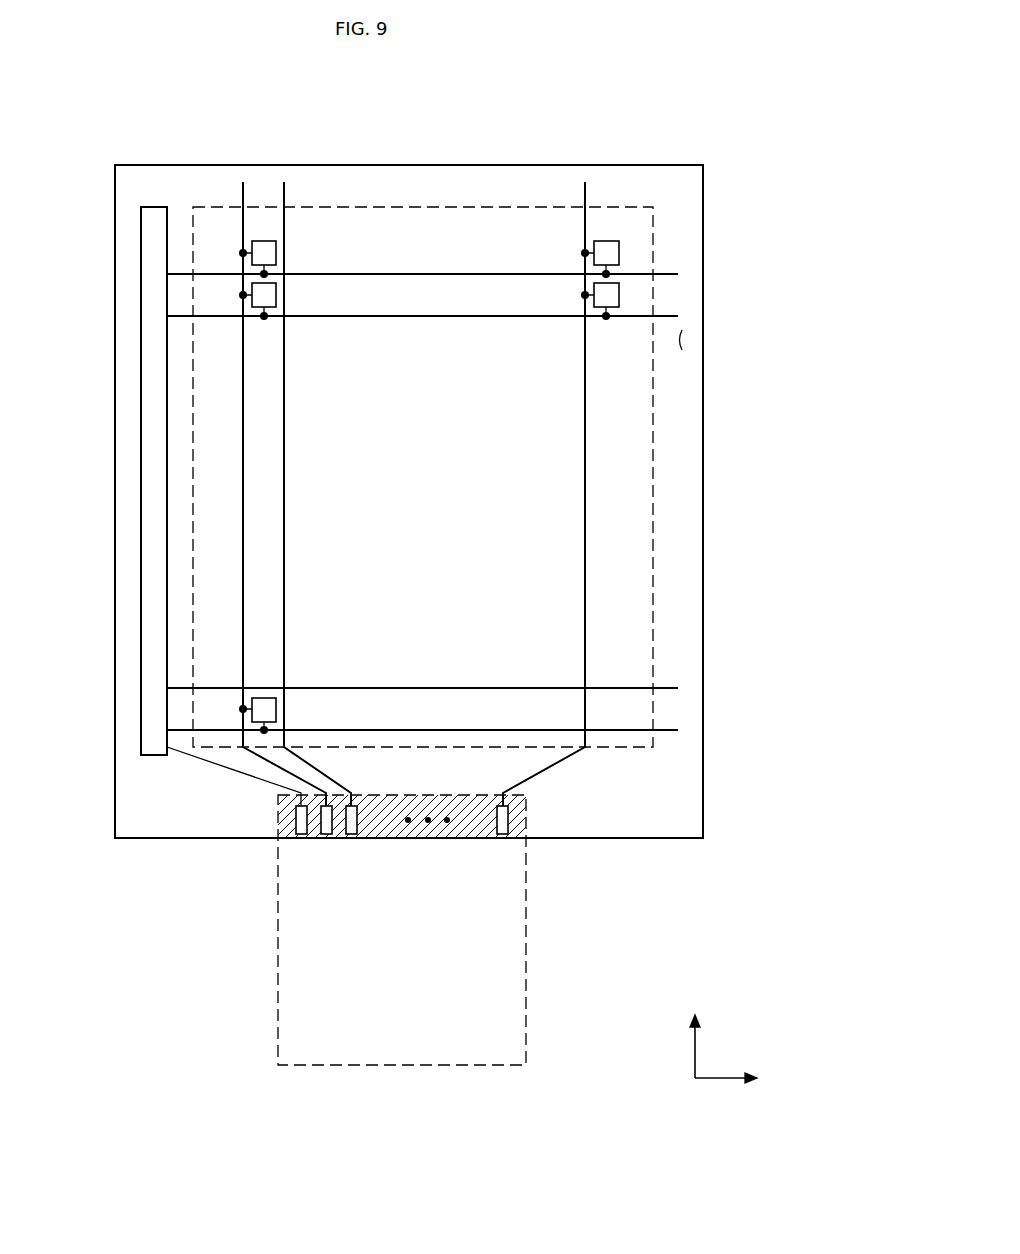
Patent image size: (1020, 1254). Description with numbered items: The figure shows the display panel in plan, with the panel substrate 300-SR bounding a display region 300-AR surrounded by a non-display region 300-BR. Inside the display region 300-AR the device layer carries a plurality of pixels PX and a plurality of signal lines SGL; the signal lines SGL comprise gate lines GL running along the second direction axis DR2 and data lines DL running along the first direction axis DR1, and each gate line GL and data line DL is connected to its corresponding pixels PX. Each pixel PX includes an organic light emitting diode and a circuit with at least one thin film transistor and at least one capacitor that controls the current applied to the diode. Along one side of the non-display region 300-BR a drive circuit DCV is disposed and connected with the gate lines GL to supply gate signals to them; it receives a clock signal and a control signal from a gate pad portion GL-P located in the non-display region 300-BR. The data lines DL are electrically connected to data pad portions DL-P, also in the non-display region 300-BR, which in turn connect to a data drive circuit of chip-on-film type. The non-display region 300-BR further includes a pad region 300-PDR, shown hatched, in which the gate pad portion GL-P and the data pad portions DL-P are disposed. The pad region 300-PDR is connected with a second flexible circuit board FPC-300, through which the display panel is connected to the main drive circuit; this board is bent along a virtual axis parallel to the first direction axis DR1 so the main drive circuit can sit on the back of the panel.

The substrate / display panel region 300-SR is at (157, 817).
The display region 300-AR is at (653, 400).
The non-display region 300-BR is at (682, 340).
The driving circuit (gate driver) DCV is at (141, 613).
The data lines DL is at (286, 640).
The gate lines GL is at (294, 688).
The signal lines SGL is at (348, 623).
The pixels PX is at (276, 707).
The second flexible circuit board FPC-300 is at (526, 928).
The pad region 300-PDR is at (286, 813).
The gate pad portion GL-P is at (301, 836).
The data pad portions DL-P is at (501, 836).
The first direction axis DR1 is at (746, 1078).
The second direction DR2 is at (697, 1036).